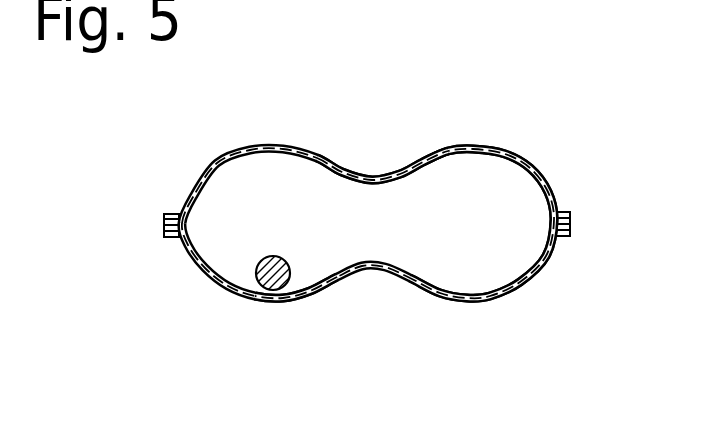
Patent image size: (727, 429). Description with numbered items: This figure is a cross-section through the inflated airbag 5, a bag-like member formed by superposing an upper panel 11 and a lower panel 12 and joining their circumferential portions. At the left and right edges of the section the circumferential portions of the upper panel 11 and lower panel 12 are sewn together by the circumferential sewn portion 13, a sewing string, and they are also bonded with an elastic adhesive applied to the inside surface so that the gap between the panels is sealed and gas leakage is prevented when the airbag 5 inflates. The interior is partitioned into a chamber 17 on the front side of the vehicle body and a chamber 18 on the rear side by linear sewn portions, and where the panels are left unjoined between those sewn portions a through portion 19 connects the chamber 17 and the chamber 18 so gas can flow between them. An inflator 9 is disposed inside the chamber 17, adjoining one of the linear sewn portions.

The airbag 5 is at (500, 88).
The inflator 9 is at (295, 302).
The upper panel 11 is at (300, 146).
The lower panel 12 is at (191, 272).
The circumferential sewn portion 13 is at (164, 217).
The chamber 17 is at (315, 241).
The chamber 18 is at (481, 212).
The through portion 19 is at (372, 217).